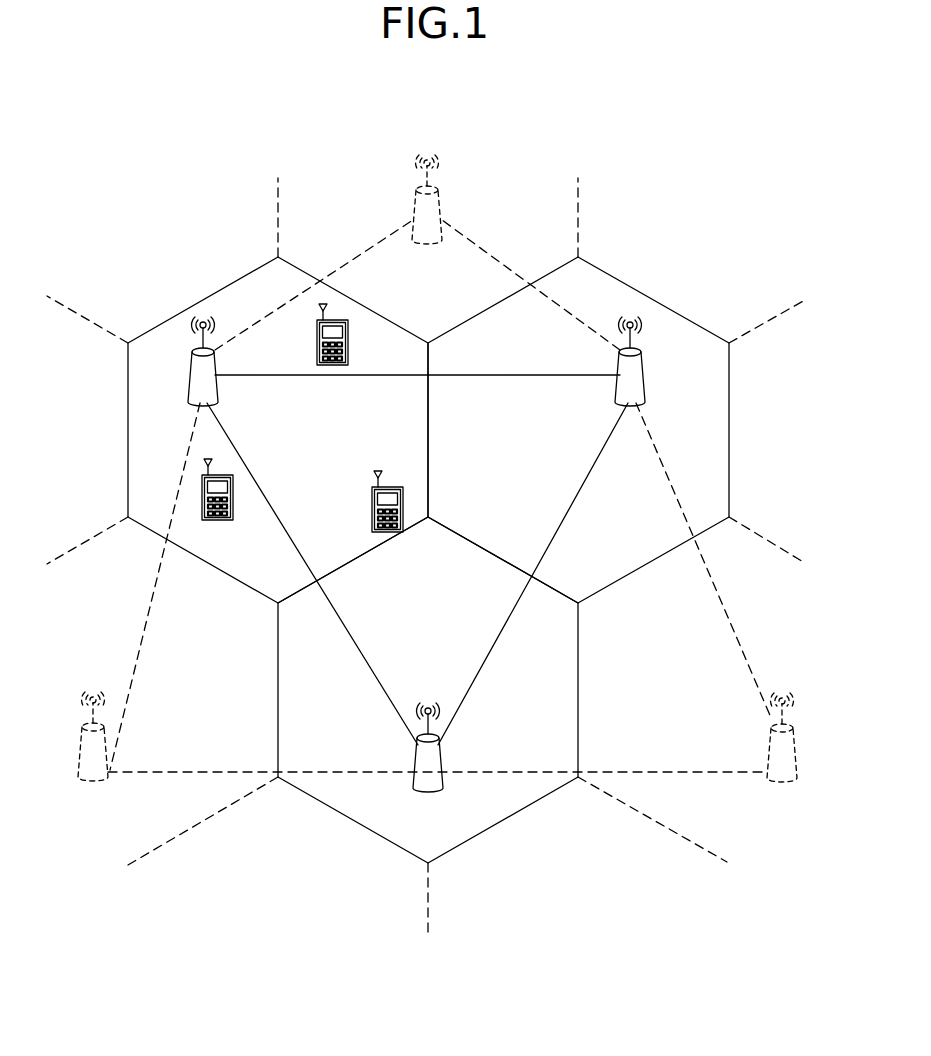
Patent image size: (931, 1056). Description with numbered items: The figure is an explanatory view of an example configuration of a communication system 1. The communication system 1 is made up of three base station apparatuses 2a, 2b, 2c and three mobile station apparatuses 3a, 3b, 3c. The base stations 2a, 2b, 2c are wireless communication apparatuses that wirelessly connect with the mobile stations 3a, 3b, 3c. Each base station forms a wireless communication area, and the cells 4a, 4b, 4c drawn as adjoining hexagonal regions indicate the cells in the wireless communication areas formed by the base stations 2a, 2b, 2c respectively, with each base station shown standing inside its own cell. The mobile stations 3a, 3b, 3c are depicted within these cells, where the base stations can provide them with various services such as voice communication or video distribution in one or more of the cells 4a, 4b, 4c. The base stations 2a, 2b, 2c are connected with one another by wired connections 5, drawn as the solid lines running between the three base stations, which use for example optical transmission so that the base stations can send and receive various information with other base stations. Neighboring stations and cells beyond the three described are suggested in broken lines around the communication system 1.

The communication system 1 is at (116, 208).
The base station apparatus 2a is at (218, 393).
The base station apparatus 2b is at (647, 395).
The base station apparatus 2c is at (444, 786).
The mobile station apparatus 3a is at (370, 500).
The mobile station apparatus 3b is at (349, 352).
The mobile station apparatus 3c is at (232, 518).
The cell 4a is at (152, 430).
The cell 4b is at (707, 478).
The cell 4c is at (377, 808).
The wired connection 5 is at (453, 375).